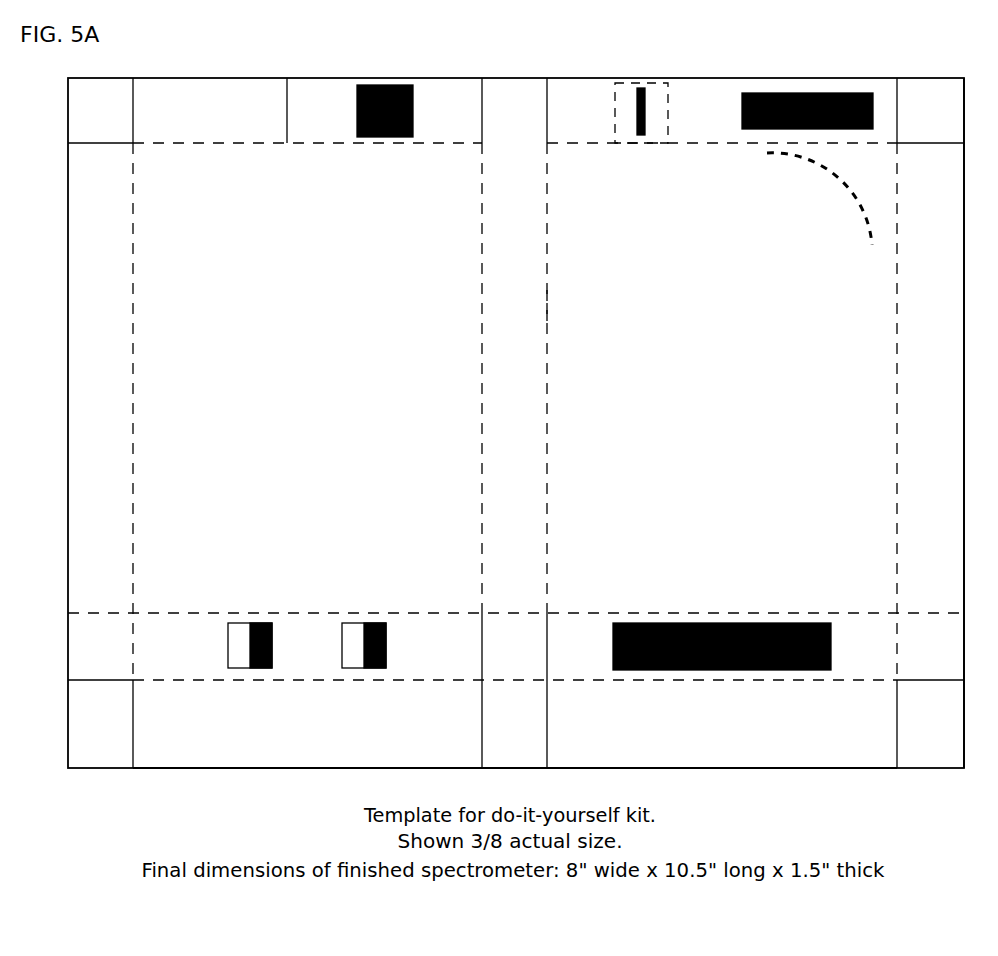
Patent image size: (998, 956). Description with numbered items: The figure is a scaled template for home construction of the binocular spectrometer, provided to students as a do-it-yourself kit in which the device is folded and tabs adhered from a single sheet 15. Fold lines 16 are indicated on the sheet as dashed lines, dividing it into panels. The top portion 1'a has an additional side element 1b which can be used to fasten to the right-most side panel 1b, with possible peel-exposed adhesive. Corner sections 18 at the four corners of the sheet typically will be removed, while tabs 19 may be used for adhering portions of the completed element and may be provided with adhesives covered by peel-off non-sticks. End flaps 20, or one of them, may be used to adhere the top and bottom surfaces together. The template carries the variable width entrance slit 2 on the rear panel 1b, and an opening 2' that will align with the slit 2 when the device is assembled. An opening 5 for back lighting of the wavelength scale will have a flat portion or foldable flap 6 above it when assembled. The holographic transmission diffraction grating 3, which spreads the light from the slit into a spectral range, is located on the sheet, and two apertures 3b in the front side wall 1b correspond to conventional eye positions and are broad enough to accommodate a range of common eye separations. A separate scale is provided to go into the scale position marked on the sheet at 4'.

The entrance slit 2 is at (390, 88).
The opening 2' is at (641, 96).
The opening for back lighting 5 is at (755, 90).
The holographic transmission diffraction grating 3 is at (633, 622).
The apertures 3b is at (245, 618).
The scale position 4' is at (819, 199).
The foldable flap 6 is at (307, 110).
The single sheet 15 is at (518, 363).
The fold lines 16 is at (548, 312).
The corner sections 18 is at (516, 423).
The tabs 19 is at (514, 423).
The end flaps 20 is at (515, 738).
The side members 1b is at (515, 411).
The top portion 1'a is at (516, 378).